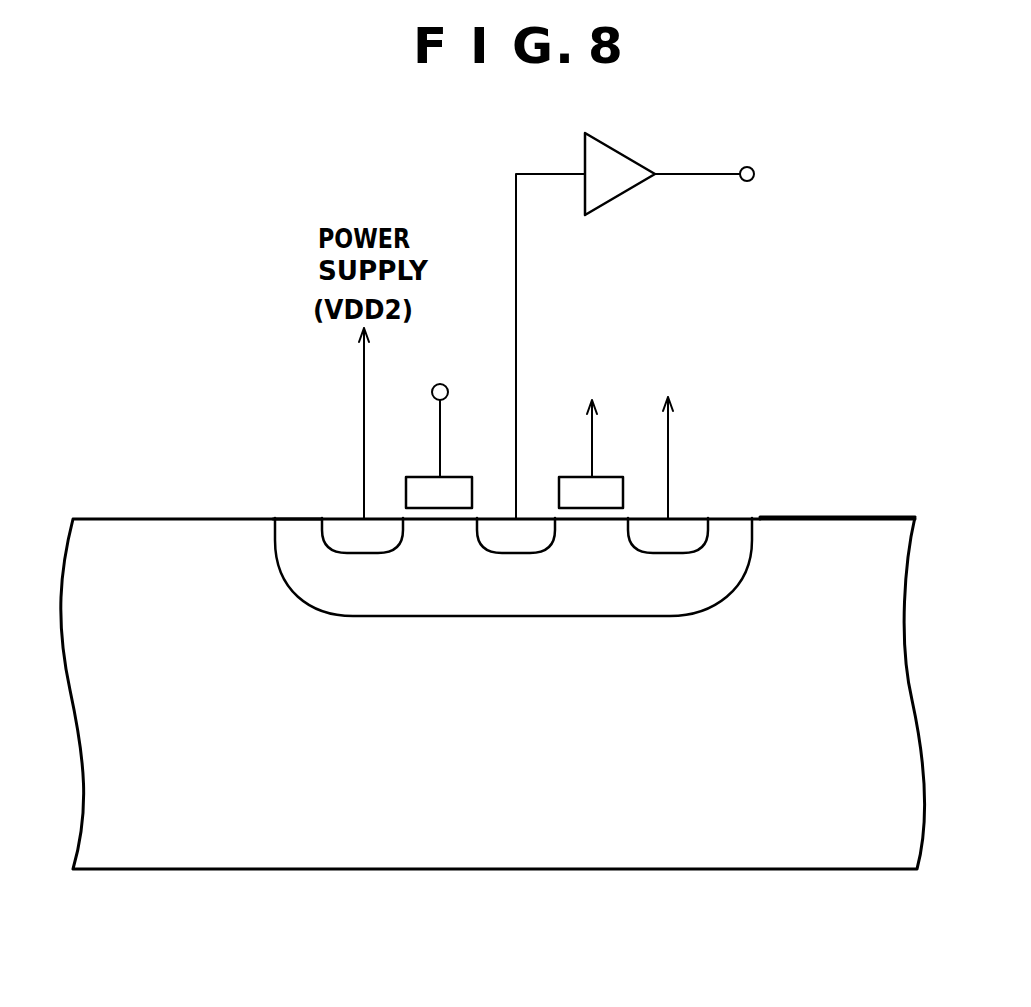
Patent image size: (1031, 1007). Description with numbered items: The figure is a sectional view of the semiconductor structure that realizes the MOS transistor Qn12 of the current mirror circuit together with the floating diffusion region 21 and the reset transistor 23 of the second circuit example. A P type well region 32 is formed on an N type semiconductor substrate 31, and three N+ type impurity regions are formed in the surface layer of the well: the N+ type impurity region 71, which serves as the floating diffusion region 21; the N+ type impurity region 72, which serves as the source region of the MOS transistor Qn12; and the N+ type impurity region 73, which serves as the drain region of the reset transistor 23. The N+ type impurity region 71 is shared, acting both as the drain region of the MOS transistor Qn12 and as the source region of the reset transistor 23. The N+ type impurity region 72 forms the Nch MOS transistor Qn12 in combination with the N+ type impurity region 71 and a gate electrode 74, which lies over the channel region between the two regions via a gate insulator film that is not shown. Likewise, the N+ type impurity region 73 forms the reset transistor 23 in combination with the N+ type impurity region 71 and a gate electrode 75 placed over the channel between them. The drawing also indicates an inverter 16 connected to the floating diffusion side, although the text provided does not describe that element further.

The inverter / output amplifier 16 is at (625, 167).
The floating diffusion region 21 is at (534, 493).
The reset transistor 23 is at (271, 482).
The N type semiconductor substrate 31 is at (897, 815).
The P type well region 32 is at (715, 558).
The N+ type impurity region 71 is at (508, 518).
The N+ type impurity region 72 is at (678, 518).
The N+ type impurity region 73 is at (353, 520).
The gate electrode 74 is at (610, 487).
The gate electrode 75 is at (415, 483).
The MOS transistor Qn12 is at (812, 450).